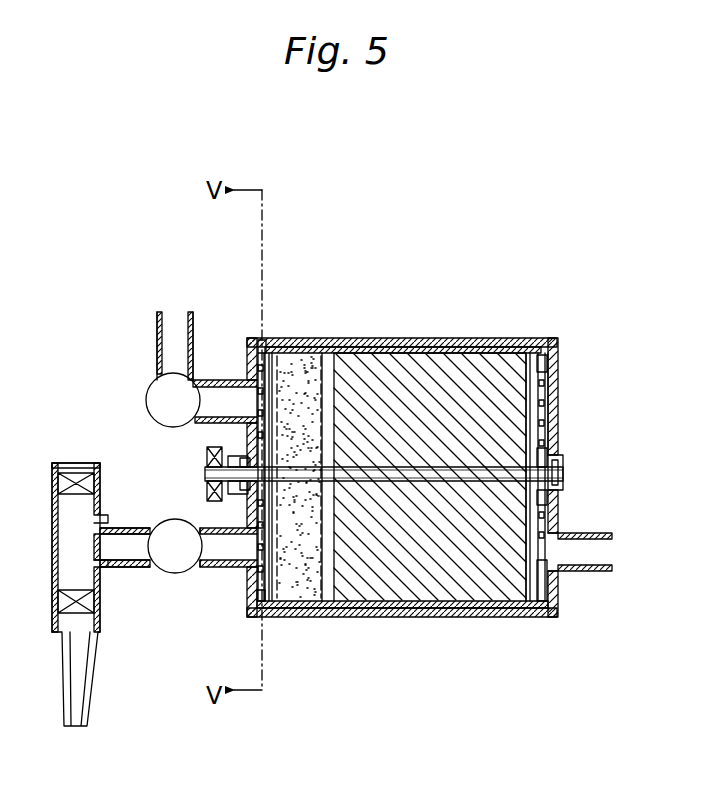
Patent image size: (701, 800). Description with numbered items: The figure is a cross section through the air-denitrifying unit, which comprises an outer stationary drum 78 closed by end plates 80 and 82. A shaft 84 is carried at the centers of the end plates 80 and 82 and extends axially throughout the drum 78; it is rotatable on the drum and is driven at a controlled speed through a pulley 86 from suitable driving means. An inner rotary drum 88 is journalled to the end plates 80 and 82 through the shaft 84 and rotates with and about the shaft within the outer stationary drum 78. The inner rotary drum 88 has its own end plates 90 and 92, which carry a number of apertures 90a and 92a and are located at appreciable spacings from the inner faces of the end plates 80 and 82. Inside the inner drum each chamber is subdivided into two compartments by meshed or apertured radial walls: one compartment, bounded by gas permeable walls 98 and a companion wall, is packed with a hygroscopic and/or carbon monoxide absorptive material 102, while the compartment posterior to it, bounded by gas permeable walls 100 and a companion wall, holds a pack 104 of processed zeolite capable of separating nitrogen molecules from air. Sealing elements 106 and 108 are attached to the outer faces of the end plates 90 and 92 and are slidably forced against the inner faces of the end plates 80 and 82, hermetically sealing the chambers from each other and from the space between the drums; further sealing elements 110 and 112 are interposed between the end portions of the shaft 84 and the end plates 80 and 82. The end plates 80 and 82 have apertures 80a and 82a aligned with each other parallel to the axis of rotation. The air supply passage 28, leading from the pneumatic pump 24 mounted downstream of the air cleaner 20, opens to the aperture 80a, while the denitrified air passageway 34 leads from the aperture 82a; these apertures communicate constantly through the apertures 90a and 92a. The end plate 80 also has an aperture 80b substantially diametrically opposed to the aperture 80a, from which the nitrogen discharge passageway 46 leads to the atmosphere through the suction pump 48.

The air cleaner 20 is at (82, 463).
The pneumatic pump 24 is at (160, 573).
The air supply passage 28 is at (202, 566).
The denitrified air passageway 34 is at (604, 572).
The nitrogen discharge passageway 46 is at (157, 344).
The suction pump 48 is at (156, 416).
The outer stationary drum 78 is at (426, 340).
The end plate 80 is at (247, 348).
The aperture 80a is at (236, 532).
The aperture 80b is at (236, 373).
The end plate 82 is at (559, 390).
The aperture 82a is at (572, 568).
The shaft 84 is at (566, 479).
The pulley 86 is at (207, 458).
The inner rotary drum 88 is at (398, 350).
The end plate 90 is at (249, 584).
The apertures 90a is at (260, 602).
The end plate 92 is at (556, 513).
The apertures 92a is at (534, 545).
The radial wall 98 is at (284, 596).
The radial wall 100 is at (270, 372).
The hygroscopic and/or carbon monoxide absorptive material 102 is at (292, 350).
The pack of processed zeolite 104 is at (432, 592).
The sealing element 106 is at (258, 338).
The sealing element 108 is at (546, 366).
The sealing element 110 is at (244, 446).
The sealing element 112 is at (563, 463).